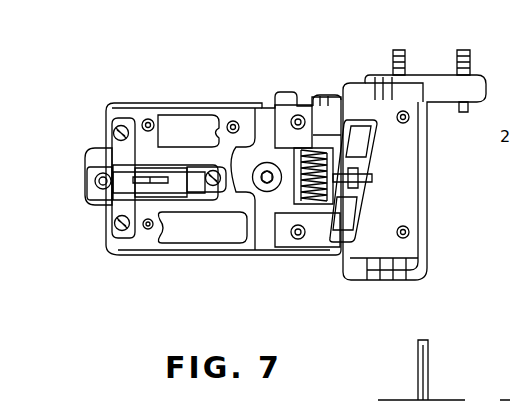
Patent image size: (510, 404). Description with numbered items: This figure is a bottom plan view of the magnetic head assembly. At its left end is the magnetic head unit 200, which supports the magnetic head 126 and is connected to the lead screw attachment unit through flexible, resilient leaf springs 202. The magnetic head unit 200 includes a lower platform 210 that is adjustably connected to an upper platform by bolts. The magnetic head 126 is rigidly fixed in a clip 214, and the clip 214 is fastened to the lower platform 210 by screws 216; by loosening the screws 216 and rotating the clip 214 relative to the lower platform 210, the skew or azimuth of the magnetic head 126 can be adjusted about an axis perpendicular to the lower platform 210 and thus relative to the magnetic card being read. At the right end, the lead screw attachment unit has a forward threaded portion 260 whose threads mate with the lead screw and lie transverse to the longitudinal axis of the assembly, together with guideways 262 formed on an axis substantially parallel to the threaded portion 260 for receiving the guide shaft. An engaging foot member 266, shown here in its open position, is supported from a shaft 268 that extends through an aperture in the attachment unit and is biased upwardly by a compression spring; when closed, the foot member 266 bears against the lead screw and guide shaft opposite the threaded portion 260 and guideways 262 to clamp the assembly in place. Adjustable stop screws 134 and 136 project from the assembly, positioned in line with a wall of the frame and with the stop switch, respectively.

The magnetic head 126 is at (90, 210).
The adjustable stop screw 134 is at (397, 48).
The adjustable stop screw 136 is at (466, 50).
The magnetic head unit 200 is at (180, 236).
The resilient leaf springs 202 is at (283, 106).
The lower platform 210 is at (234, 234).
The clip 214 is at (135, 107).
The screws 216 is at (113, 108).
The threaded portion 260 is at (308, 106).
The guideways 262 is at (388, 92).
The engaging foot member 266 is at (343, 223).
The shaft 268 is at (372, 178).